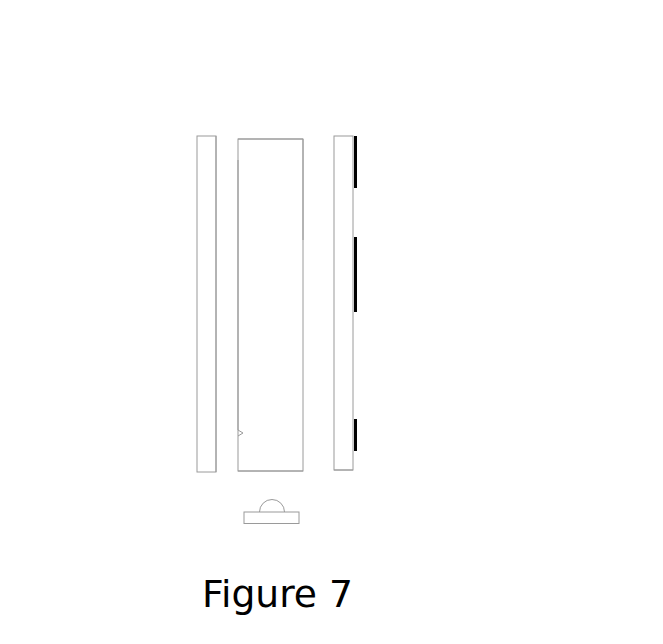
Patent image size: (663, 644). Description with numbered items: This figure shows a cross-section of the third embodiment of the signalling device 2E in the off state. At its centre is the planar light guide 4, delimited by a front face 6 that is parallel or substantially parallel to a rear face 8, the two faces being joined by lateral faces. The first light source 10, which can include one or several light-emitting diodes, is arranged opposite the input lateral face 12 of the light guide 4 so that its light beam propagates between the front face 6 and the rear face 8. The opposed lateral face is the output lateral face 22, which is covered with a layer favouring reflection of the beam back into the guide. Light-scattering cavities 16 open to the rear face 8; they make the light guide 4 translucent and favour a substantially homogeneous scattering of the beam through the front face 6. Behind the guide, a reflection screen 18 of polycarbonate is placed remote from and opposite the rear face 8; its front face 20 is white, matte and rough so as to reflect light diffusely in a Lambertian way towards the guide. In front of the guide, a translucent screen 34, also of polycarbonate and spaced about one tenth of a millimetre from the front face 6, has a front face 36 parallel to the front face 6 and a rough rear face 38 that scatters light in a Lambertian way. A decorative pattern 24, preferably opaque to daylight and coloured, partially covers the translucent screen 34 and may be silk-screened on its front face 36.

The signalling device 2E is at (266, 93).
The light guide 4 is at (289, 158).
The front face 6 is at (303, 197).
The rear face 8 is at (238, 155).
The first light source 10 is at (228, 507).
The input lateral face 12 is at (282, 471).
The cavities 16 is at (242, 311).
The reflection screen 18 is at (202, 183).
The front face 20 is at (217, 237).
The output lateral face 22 is at (272, 139).
The decorative pattern 24 is at (357, 436).
The translucent screen 34 is at (345, 466).
The front face 36 is at (353, 380).
The rear face 38 is at (335, 334).